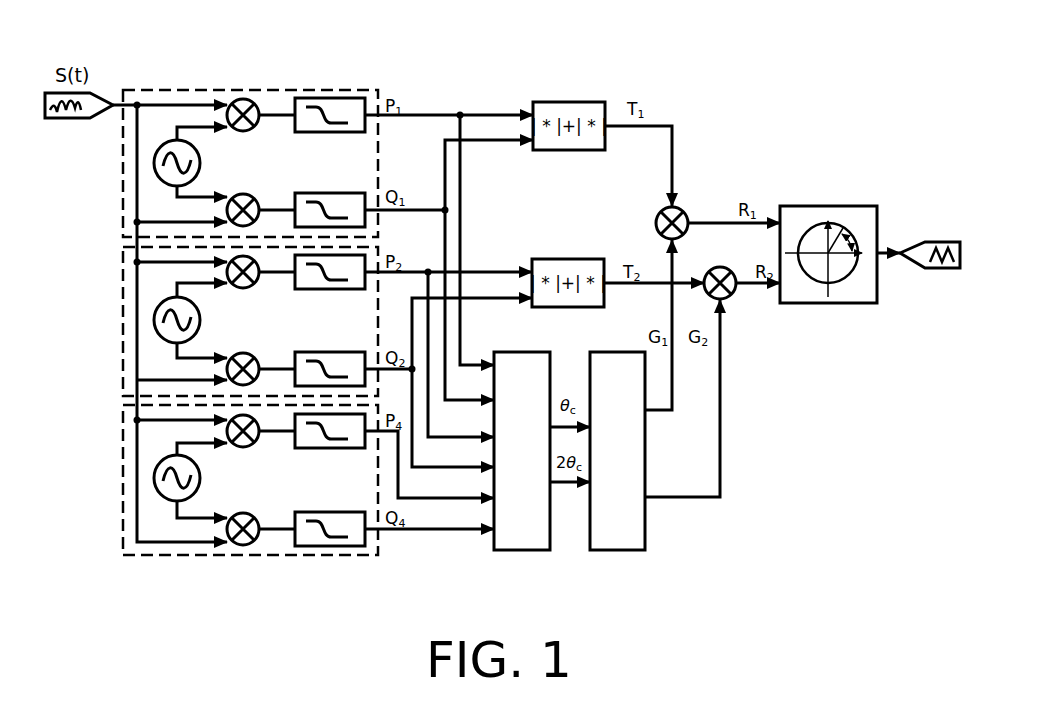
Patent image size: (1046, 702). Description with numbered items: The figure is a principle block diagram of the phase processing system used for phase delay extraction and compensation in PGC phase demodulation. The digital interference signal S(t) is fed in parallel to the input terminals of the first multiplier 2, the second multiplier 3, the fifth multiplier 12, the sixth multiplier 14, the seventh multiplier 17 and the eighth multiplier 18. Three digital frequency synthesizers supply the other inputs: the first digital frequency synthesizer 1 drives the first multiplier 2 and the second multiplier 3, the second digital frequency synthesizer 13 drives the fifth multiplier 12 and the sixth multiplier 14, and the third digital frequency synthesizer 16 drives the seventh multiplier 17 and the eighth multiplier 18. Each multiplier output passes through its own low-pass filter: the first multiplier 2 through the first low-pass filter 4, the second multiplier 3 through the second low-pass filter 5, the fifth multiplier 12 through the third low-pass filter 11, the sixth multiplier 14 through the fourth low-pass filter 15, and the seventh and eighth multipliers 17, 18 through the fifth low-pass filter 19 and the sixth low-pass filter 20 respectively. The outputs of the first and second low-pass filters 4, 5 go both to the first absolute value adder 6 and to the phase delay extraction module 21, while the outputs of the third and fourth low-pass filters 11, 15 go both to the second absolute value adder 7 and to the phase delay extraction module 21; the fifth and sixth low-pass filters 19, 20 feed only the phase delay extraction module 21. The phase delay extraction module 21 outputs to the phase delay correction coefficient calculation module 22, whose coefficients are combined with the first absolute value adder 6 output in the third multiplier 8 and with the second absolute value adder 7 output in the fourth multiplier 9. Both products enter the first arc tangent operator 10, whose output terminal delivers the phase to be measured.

The first digital frequency synthesizer 1 is at (165, 140).
The first multiplier 2 is at (231, 103).
The second multiplier 3 is at (235, 193).
The first low-pass filter 4 is at (317, 182).
The second low-pass filter 5 is at (315, 90).
The first absolute value adder 6 is at (583, 102).
The second absolute value adder 7 is at (585, 258).
The third multiplier 8 is at (683, 211).
The fourth multiplier 9 is at (731, 271).
The first arc tangent operator 10 is at (848, 206).
The third low-pass filter 11 is at (293, 255).
The fifth multiplier 12 is at (207, 258).
The second digital frequency synthesizer 13 is at (157, 310).
The sixth multiplier 14 is at (210, 357).
The fourth low-pass filter 15 is at (297, 377).
The third digital frequency synthesizer 16 is at (163, 502).
The seventh multiplier 17 is at (237, 445).
The eighth multiplier 18 is at (235, 543).
The fifth low-pass filter 19 is at (318, 452).
The sixth low-pass filter 20 is at (318, 548).
The phase delay extraction module 21 is at (550, 495).
The phase delay correction coefficient calculation module 22 is at (647, 497).